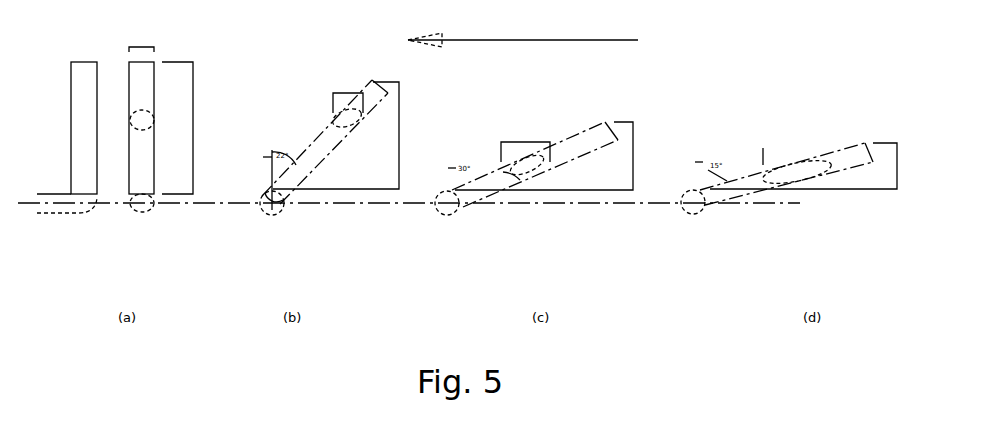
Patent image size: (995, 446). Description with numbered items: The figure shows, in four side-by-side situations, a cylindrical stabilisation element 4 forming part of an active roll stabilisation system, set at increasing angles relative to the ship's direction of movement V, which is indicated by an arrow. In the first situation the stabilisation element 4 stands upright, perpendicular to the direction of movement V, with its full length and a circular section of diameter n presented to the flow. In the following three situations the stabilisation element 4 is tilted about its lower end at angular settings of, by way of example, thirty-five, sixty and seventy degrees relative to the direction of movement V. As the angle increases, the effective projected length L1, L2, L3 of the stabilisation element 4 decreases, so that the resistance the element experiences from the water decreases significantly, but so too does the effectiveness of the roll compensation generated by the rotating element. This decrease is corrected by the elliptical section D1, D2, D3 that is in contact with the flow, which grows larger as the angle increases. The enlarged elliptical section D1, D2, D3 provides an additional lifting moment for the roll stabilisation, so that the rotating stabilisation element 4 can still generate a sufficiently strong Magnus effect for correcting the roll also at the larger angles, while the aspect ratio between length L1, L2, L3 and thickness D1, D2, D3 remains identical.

The stabilisation element 4 is at (108, 102).
The tooth width n is at (141, 44).
The ship's direction of movement V is at (523, 33).
The elliptical section D1 is at (347, 107).
The elliptical section D2 is at (525, 155).
The elliptical section D3 is at (797, 163).
The projected length L1 is at (336, 135).
The projected length L2 is at (544, 156).
The projected length L3 is at (803, 166).